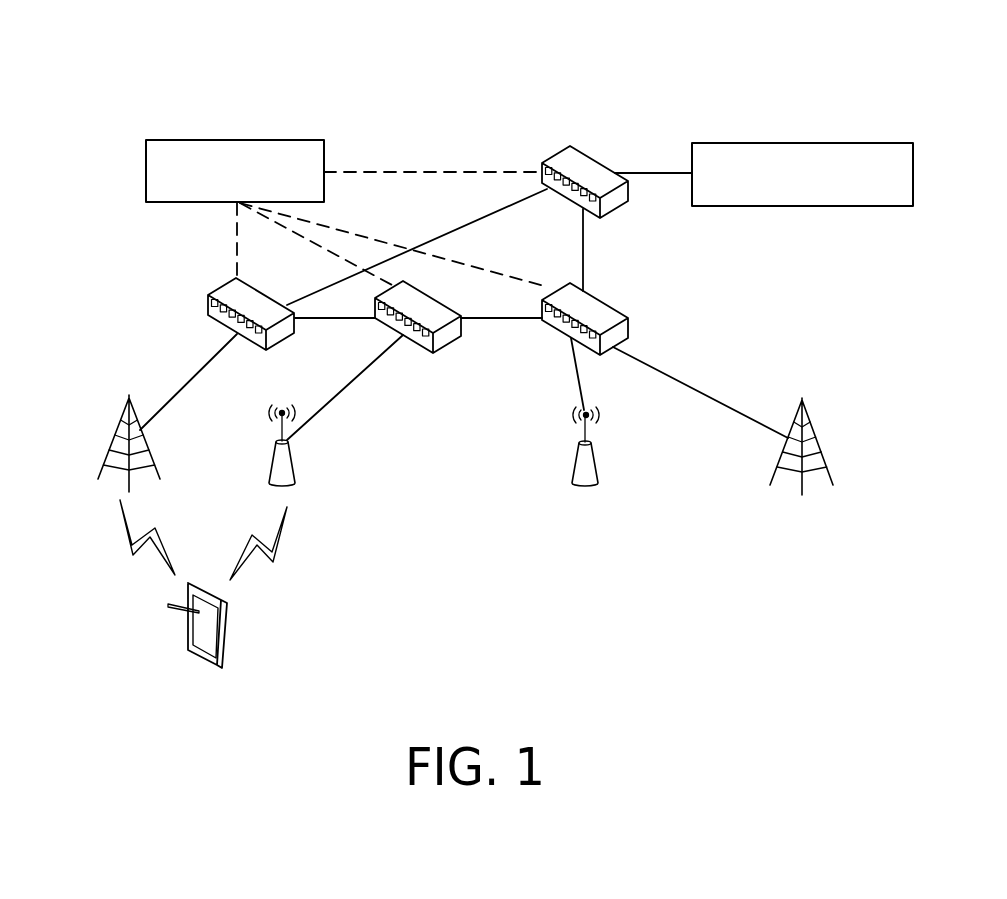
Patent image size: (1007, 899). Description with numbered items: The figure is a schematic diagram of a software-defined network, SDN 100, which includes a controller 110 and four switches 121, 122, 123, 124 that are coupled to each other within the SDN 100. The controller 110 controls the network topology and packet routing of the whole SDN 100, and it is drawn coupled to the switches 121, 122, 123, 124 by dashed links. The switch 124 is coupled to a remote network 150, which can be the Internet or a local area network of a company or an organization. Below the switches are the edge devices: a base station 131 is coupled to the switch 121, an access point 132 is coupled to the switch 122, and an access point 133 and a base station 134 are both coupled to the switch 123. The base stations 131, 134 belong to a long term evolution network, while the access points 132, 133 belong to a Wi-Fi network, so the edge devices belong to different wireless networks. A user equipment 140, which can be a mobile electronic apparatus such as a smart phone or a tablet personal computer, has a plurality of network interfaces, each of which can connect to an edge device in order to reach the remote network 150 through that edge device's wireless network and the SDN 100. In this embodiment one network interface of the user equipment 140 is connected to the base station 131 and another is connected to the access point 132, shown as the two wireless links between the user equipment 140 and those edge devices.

The software-defined network 100 is at (530, 92).
The controller 110 is at (235, 140).
The switch 121 is at (208, 307).
The switch 122 is at (448, 348).
The switch 123 is at (605, 312).
The switch 124 is at (573, 153).
The base station 131 is at (123, 423).
The access point 132 is at (288, 468).
The access point 133 is at (595, 470).
The base station 134 is at (818, 442).
The user equipment 140 is at (225, 635).
The remote network 150 is at (780, 143).